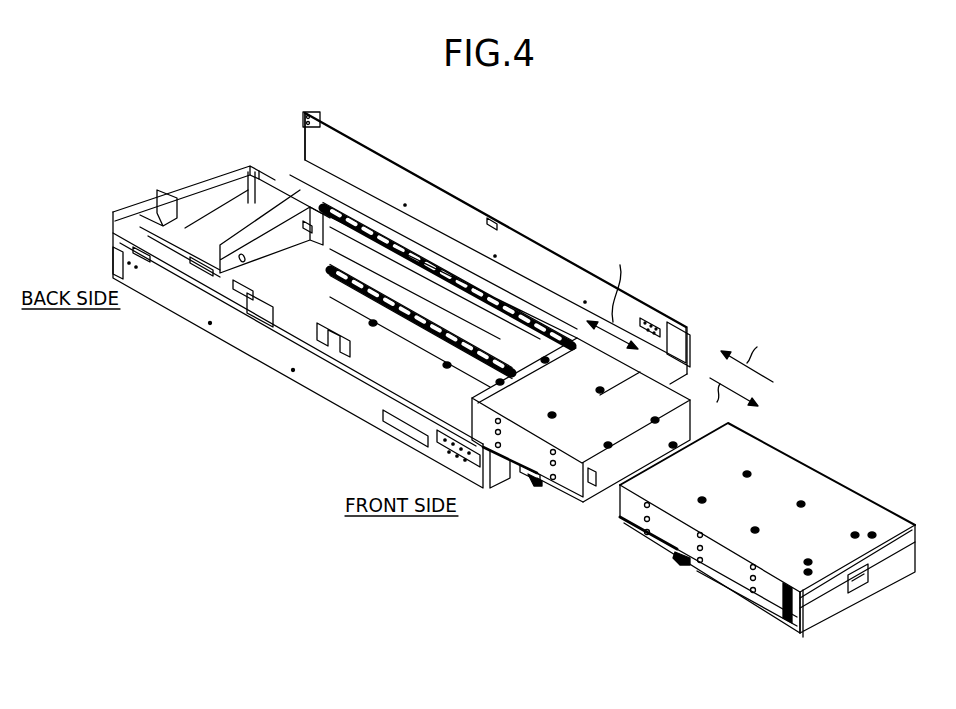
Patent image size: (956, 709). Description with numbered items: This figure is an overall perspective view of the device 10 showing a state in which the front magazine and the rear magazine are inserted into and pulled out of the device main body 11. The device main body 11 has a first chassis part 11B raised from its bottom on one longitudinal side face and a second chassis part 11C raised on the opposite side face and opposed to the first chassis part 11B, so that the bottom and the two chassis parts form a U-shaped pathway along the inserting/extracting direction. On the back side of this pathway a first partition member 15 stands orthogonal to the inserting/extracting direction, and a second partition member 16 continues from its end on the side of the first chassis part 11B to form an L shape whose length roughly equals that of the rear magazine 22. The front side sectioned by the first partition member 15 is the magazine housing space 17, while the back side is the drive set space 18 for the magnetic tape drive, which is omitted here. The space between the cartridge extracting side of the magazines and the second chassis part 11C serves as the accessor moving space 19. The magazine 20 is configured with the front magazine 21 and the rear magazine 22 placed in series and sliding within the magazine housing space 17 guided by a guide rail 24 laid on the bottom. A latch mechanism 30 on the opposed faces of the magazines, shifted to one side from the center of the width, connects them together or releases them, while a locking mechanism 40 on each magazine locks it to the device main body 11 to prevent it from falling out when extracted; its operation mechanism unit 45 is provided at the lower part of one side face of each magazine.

The device 10 is at (445, 290).
The device main body 11 is at (446, 188).
The first chassis part 11B is at (156, 284).
The second chassis part 11C is at (394, 160).
The first partition member 15 is at (255, 262).
The second partition member 16 is at (288, 312).
The magazine housing space 17 is at (405, 362).
The drive set space 18 is at (200, 222).
The accessor moving space 19 is at (544, 302).
The magazine 20 is at (822, 470).
The front magazine 21 is at (774, 552).
The rear magazine 22 is at (583, 432).
The guide rail 24 is at (355, 325).
The latch mechanism 30 is at (594, 482).
The locking mechanism 40 is at (532, 478).
The operation mechanism unit 45 is at (538, 482).